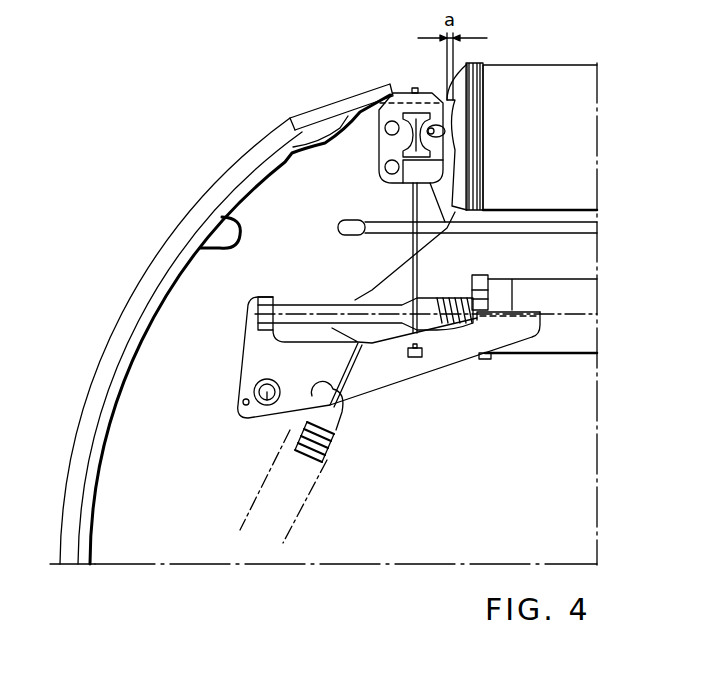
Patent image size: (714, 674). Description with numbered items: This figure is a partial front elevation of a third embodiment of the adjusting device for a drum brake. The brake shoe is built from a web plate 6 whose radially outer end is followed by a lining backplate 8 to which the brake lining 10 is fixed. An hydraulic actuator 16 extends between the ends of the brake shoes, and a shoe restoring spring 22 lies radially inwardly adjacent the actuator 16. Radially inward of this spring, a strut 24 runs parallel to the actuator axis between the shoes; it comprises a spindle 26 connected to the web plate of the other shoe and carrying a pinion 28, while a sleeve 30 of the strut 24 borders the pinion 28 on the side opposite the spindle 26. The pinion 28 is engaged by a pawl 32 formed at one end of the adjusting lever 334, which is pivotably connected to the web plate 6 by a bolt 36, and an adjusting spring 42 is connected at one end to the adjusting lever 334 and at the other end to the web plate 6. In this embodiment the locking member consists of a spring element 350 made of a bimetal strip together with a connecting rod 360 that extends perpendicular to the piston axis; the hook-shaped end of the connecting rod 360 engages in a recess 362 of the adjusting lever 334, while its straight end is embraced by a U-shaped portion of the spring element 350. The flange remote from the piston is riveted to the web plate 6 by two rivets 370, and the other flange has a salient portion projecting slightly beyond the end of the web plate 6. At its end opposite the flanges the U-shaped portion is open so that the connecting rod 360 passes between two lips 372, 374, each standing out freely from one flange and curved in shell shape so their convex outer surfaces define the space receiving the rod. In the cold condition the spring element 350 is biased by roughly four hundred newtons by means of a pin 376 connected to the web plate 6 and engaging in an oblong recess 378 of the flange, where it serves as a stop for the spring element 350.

The web plate 6 is at (157, 545).
The lining backplate 8 is at (78, 548).
The brake lining 10 is at (140, 302).
The hydraulic actuator 16 is at (548, 73).
The shoe restoring spring 22 is at (565, 225).
The strut 24 is at (570, 358).
The spindle 26 is at (568, 341).
The pinion 28 is at (482, 275).
The sleeve 30 is at (305, 305).
The pawl 32 is at (530, 308).
The bolt 36 is at (255, 405).
The adjusting spring 42 is at (310, 460).
The adjusting lever 334 is at (373, 365).
The spring element 350 is at (418, 92).
The connecting rod 360 is at (412, 200).
The recess 362 is at (425, 357).
The rivets 370 is at (385, 163).
The lip 372 is at (386, 121).
The lip 374 is at (447, 110).
The pin 376 is at (440, 131).
The recess 378 is at (447, 136).